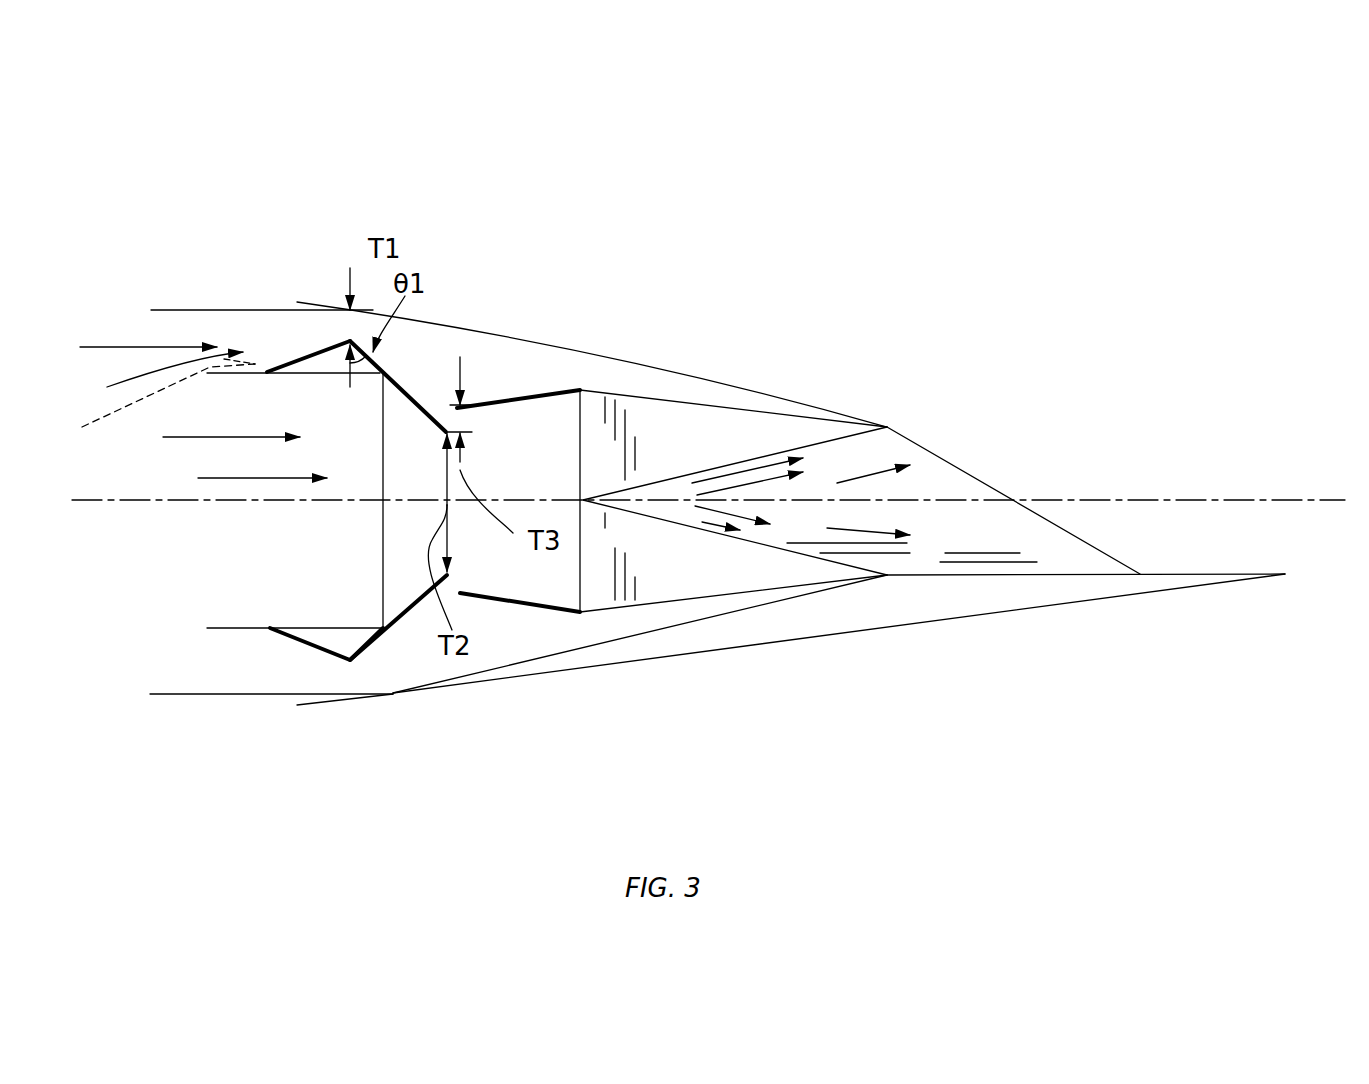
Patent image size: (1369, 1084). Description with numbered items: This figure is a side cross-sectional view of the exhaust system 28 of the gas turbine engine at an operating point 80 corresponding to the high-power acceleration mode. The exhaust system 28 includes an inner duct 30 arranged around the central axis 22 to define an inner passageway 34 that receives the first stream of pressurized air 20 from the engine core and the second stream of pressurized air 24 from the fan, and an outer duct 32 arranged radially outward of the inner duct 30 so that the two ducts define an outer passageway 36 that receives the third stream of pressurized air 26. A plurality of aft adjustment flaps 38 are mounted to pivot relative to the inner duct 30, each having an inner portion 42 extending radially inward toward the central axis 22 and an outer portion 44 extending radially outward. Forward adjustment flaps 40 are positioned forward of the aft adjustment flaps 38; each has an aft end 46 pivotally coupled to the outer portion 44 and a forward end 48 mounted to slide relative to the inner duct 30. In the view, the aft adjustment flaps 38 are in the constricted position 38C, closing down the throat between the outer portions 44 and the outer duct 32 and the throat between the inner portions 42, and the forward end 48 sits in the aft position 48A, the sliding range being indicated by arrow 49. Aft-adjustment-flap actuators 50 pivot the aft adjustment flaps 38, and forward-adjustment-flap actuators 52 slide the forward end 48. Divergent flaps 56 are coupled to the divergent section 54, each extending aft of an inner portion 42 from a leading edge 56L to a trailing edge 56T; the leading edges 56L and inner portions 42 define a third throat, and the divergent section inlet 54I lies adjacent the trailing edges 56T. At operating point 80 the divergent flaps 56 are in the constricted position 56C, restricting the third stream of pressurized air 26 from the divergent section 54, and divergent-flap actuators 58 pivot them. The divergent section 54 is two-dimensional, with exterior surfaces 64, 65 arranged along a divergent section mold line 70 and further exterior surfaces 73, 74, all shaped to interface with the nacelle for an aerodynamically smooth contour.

The first stream of pressurized air 20 is at (258, 480).
The central axis 22 is at (73, 503).
The second stream of pressurized air 24 is at (202, 440).
The third stream of pressurized air 26 is at (97, 343).
The exhaust system 28 is at (505, 258).
The inner duct 30 is at (220, 378).
The outer duct 32 is at (170, 306).
The inner passageway 34 is at (197, 481).
The outer passageway 36 is at (241, 346).
The aft adjustment flaps 38 is at (408, 367).
The constricted position 38C is at (434, 371).
The forward adjustment flaps 40 is at (339, 329).
The inner portion 42 is at (383, 530).
The outer portion 44 is at (391, 356).
The aft end 46 is at (347, 324).
The forward end 48 is at (298, 345).
The aft position 48A is at (147, 378).
The arrow 49 is at (150, 401).
The aft-adjustment-flap actuators 50 is at (362, 377).
The forward-adjustment-flap actuators 52 is at (269, 361).
The divergent section 54 is at (603, 337).
The divergent section inlet 54I is at (584, 467).
The divergent flaps 56 is at (533, 390).
The constricted position 56C is at (571, 381).
The leading edge 56L is at (468, 416).
The trailing edge 56T is at (578, 396).
The divergent-flap actuators 58 is at (591, 379).
The exterior surface 64 is at (748, 389).
The exterior surface 65 is at (572, 674).
The divergent section mold line 70 is at (312, 707).
The exterior surface 73 is at (1069, 573).
The exterior surface 74 is at (992, 544).
The operating point 80 is at (592, 244).